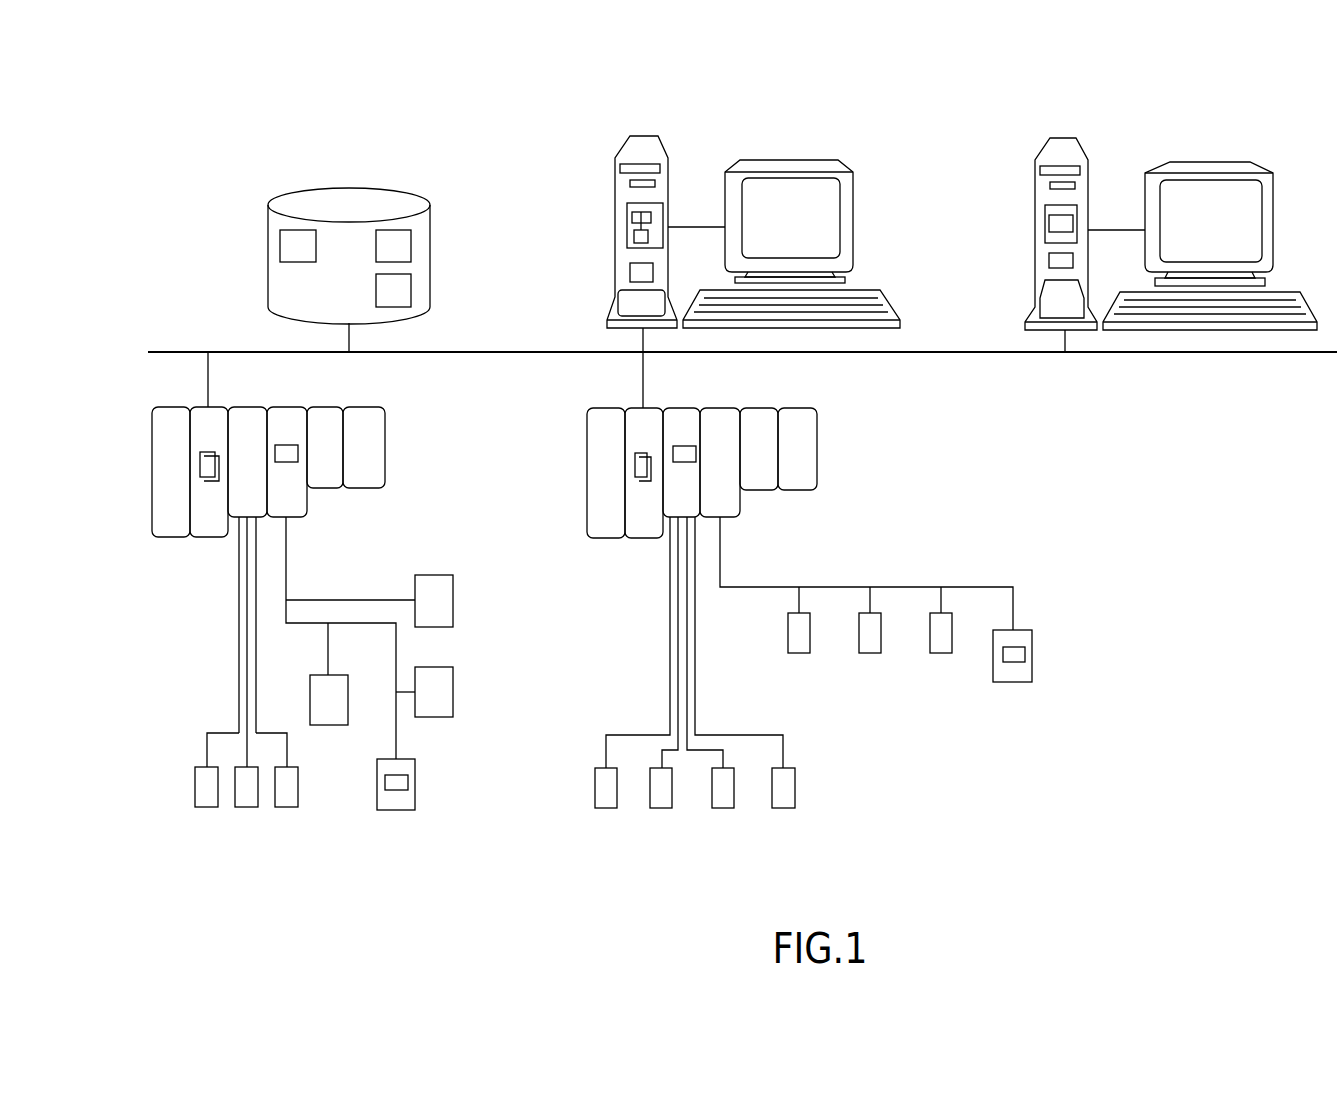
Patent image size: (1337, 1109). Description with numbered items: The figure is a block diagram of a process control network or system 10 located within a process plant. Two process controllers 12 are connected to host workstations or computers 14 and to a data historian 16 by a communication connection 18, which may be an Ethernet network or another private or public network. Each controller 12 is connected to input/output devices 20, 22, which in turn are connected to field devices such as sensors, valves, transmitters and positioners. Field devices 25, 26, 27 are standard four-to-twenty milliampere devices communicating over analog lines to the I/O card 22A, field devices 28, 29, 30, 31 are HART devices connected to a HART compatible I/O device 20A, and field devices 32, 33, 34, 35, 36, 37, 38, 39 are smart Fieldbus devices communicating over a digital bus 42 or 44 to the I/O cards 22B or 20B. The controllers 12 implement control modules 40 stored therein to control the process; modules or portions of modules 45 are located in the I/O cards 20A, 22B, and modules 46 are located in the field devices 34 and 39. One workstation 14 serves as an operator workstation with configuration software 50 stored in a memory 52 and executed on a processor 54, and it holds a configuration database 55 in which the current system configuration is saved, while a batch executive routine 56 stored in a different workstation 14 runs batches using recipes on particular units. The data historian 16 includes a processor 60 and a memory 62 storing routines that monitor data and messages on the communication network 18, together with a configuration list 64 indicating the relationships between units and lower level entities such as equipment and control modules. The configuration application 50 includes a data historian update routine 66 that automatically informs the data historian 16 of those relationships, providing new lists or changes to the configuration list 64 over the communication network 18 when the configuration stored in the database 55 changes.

The process control network 10 is at (527, 88).
The process controller 12 is at (203, 420).
The host workstation 14 is at (942, 217).
The data historian 16 is at (347, 257).
The communication connection 18 is at (500, 351).
The input/output device 20 is at (813, 609).
The HART compatible I/O device 20A is at (685, 430).
The I/O card 20B is at (717, 428).
The input/output device 22 is at (623, 604).
The I/O card 22A is at (250, 430).
The I/O card 22B is at (285, 425).
The field device 25 is at (210, 808).
The field device 26 is at (250, 808).
The field device 27 is at (290, 808).
The field device 28 is at (609, 809).
The field device 29 is at (664, 809).
The field device 30 is at (726, 809).
The field device 31 is at (788, 809).
The field device 32 is at (454, 602).
The field device 33 is at (454, 695).
The field device 34 is at (398, 811).
The field device 35 is at (333, 726).
The field device 36 is at (803, 654).
The field device 37 is at (874, 654).
The field device 38 is at (944, 654).
The field device 39 is at (1016, 684).
The control module 40 is at (208, 478).
The digital bus 42 is at (288, 587).
The digital bus 44 is at (770, 586).
The module 45 is at (290, 463).
The module 46 is at (409, 785).
The configuration software 50 is at (631, 216).
The memory 52 is at (626, 207).
The processor 54 is at (629, 276).
The configuration database 55 is at (633, 237).
The batch executive routine 56 is at (1048, 226).
The processor 60 is at (279, 248).
The memory 62 is at (412, 245).
The configuration list 64 is at (412, 286).
The data historian update routine 66 is at (648, 218).